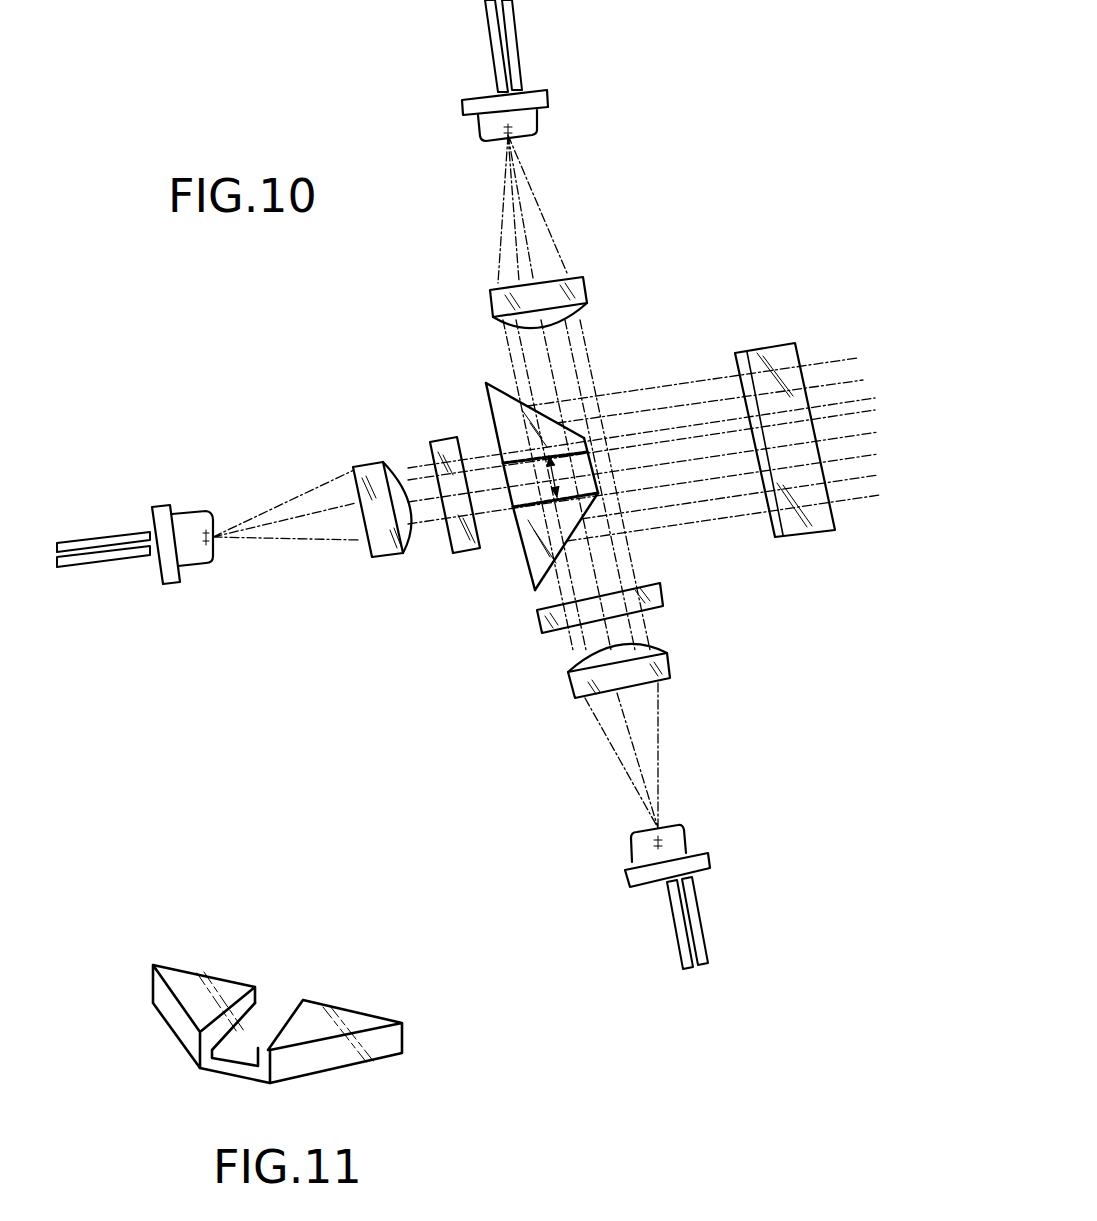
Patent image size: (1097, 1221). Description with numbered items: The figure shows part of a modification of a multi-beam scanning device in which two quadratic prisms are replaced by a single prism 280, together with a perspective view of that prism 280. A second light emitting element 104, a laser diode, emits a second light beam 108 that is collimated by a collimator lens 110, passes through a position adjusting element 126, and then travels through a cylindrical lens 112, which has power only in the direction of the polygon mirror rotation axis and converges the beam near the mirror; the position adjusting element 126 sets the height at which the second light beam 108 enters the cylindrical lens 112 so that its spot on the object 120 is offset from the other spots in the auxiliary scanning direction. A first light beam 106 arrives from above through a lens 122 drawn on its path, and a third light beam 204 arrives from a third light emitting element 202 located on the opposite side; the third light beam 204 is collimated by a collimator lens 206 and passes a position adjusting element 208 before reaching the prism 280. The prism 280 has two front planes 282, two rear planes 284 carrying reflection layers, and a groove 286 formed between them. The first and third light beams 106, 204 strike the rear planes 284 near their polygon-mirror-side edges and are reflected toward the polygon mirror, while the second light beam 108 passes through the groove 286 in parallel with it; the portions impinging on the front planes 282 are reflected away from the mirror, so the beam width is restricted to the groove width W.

In FIG. 10, the second light emitting element 104 is at (155, 507).
In FIG. 10, the first light beam 106 is at (588, 212).
In FIG. 10, the second light beam 108 is at (300, 543).
In FIG. 10, the collimator lens 110 is at (370, 468).
In FIG. 10, the cylindrical lens 112 is at (765, 350).
In FIG. 10, the object 120 is at (588, 97).
In FIG. 10, the collimating lens 122 is at (502, 300).
In FIG. 10, the position adjusting element 126 is at (447, 540).
In FIG. 10, the third light emitting element 202 is at (627, 878).
In FIG. 10, the third light beam 204 is at (615, 760).
In FIG. 10, the collimator lens 206 is at (667, 675).
In FIG. 10, the position adjusting element 208 is at (663, 603).
In FIG. 10, the prism 280 is at (560, 479).
In FIG. 11, the prism 280 is at (272, 998).
In FIG. 10, the front plane 282 is at (497, 437).
In FIG. 10, the rear plane 284 is at (550, 408).
In FIG. 11, the rear plane 284 is at (178, 1025).
In FIG. 10, the groove 286 is at (512, 507).
In FIG. 11, the groove 286 is at (265, 1018).
In FIG. 10, the width of the groove W is at (597, 482).